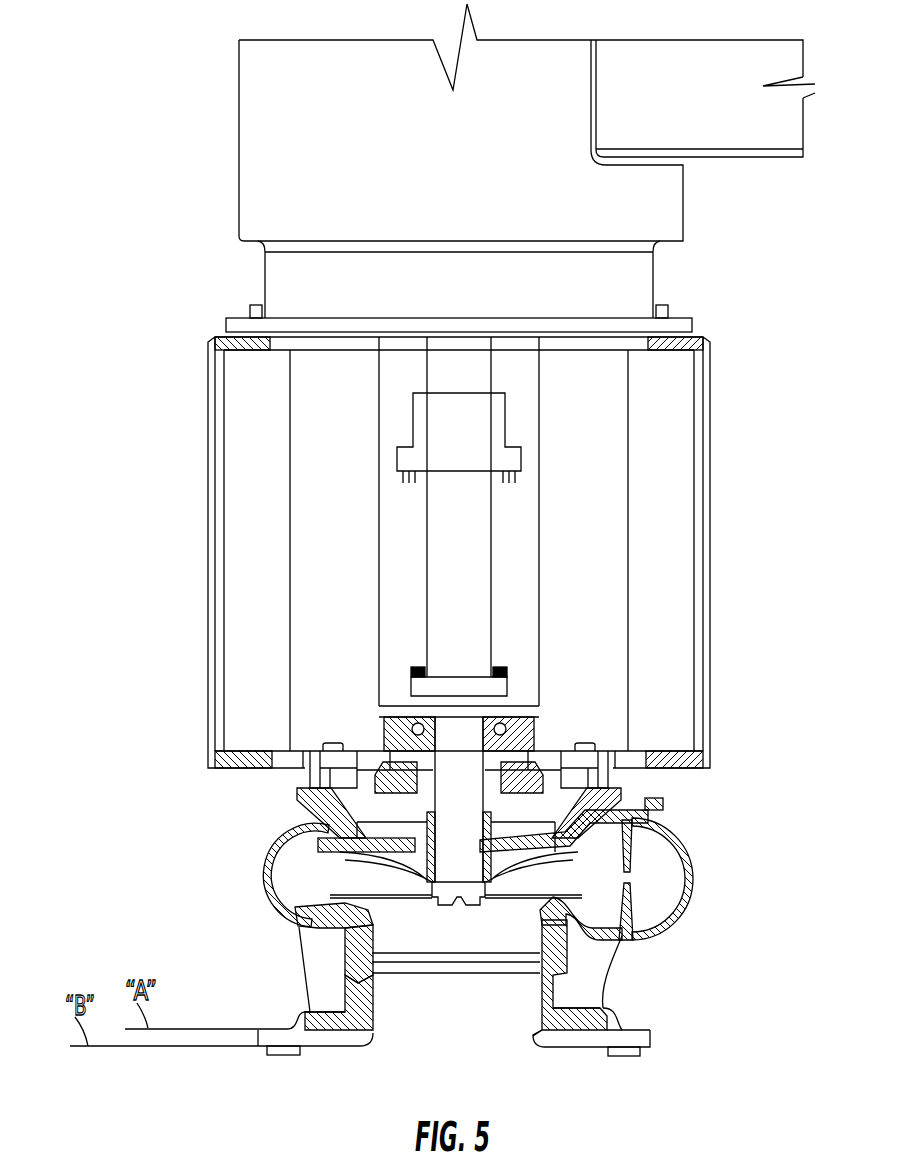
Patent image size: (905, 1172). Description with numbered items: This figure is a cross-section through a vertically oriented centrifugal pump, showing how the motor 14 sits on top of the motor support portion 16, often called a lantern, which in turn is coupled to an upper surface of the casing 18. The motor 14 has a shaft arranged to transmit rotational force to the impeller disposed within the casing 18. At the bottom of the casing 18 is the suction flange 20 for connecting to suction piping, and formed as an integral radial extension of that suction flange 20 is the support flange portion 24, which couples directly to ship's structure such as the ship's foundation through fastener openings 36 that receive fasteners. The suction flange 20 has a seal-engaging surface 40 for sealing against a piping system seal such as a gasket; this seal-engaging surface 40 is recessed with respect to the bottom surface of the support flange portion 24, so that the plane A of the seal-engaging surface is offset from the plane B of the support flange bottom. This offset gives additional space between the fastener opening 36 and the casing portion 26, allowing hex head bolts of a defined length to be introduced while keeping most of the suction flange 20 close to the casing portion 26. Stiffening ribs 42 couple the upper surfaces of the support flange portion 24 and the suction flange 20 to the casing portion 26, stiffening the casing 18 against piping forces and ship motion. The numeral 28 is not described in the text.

The motor 14 is at (239, 180).
The motor support portion 16 is at (712, 500).
The casing 18 is at (690, 850).
The casing portion 26 is at (692, 893).
The stiffening ribs 42 is at (320, 958).
The suction flange 20 is at (590, 1010).
The support flange portion 24 is at (650, 1036).
The seal-engaging surface 40 is at (553, 1033).
The support wall 28 is at (580, 1025).
The fastener openings 36 is at (633, 1058).